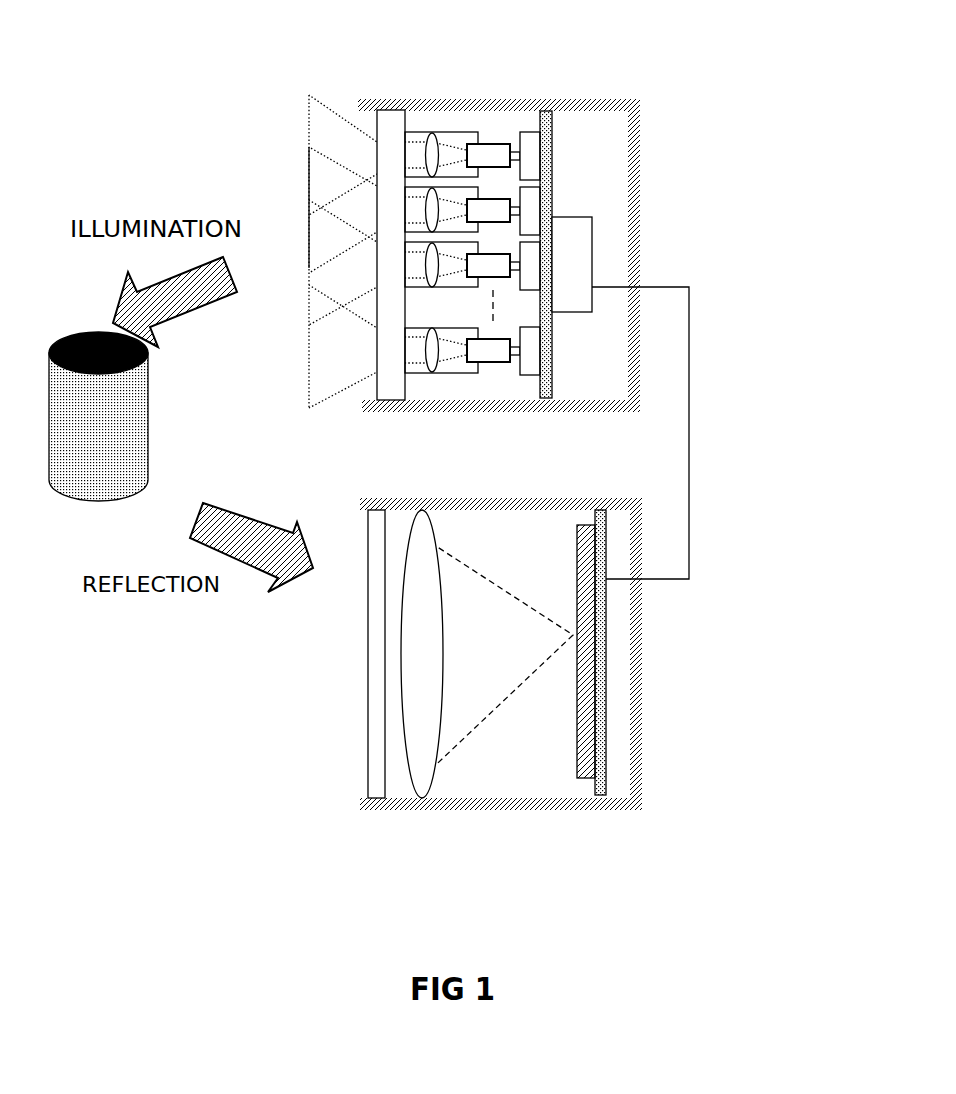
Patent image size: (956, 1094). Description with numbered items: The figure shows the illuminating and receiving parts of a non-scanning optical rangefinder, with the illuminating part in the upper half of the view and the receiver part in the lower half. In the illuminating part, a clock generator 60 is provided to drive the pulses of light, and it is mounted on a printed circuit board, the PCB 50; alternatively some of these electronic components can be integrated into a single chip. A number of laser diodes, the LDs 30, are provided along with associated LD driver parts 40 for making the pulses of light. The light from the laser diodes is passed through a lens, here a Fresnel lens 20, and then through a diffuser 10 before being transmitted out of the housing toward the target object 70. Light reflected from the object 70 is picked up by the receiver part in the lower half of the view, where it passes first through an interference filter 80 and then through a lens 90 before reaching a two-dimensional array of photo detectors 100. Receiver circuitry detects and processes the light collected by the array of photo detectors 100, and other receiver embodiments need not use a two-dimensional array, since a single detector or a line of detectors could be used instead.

The diffuser 10 is at (387, 112).
The Fresnel lens 20 is at (430, 133).
The laser diodes 30 is at (483, 144).
The LD driver parts 40 is at (530, 132).
The printed circuit board 50 is at (552, 147).
The clock generator 60 is at (592, 217).
The target object 70 is at (143, 416).
The interference filter 80 is at (373, 798).
The lens 90 is at (422, 797).
The 2D array of photo detectors 100 is at (583, 778).